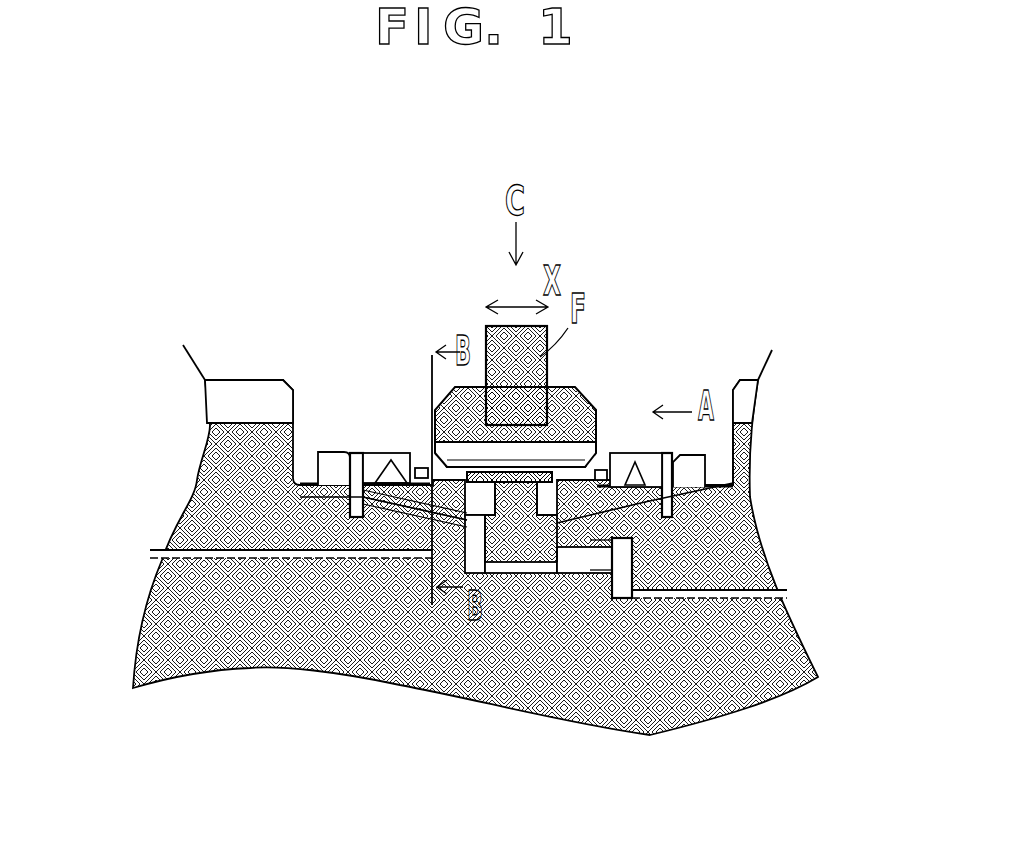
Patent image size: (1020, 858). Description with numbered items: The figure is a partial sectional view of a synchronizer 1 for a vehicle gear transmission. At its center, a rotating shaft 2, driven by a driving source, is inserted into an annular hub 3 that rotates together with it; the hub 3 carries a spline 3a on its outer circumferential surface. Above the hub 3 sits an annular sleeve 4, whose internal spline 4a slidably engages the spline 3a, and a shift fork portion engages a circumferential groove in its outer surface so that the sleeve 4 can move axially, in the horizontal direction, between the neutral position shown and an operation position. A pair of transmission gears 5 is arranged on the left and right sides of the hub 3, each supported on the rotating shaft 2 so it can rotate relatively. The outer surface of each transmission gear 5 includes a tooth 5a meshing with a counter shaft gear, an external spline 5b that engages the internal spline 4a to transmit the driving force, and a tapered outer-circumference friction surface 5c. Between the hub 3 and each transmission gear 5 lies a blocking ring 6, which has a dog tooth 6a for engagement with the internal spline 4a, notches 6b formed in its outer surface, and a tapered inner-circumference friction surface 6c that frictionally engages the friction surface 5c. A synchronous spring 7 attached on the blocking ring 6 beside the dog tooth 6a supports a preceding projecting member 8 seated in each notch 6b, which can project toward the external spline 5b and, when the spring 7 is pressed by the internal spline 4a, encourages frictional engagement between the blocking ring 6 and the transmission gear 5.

The synchronizer 1 is at (468, 302).
The rotating shaft 2 is at (475, 688).
The hub 3 is at (522, 548).
The spline 3a is at (543, 465).
The sleeve 4 is at (553, 397).
The internal spline 4a is at (552, 453).
The transmission gear 5 is at (337, 290).
The tooth 5a is at (228, 392).
The external spline 5b is at (330, 463).
The outer-circumference friction surface 5c is at (363, 453).
The blocking ring 6 is at (647, 493).
The dog tooth 6a is at (368, 495).
The notch 6b is at (385, 497).
The inner-circumference friction surface 6c is at (405, 505).
The synchronous spring 7 is at (421, 467).
The preceding projecting member 8 is at (380, 457).